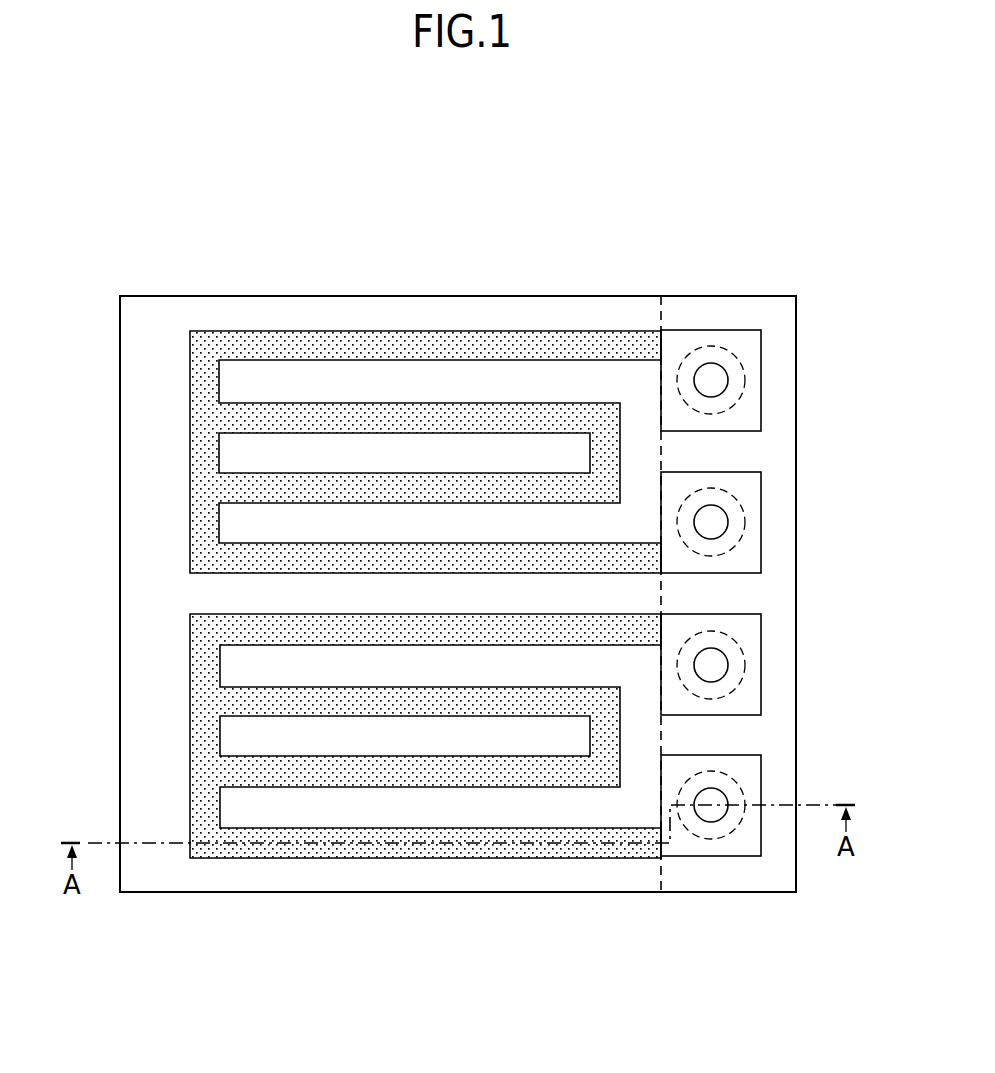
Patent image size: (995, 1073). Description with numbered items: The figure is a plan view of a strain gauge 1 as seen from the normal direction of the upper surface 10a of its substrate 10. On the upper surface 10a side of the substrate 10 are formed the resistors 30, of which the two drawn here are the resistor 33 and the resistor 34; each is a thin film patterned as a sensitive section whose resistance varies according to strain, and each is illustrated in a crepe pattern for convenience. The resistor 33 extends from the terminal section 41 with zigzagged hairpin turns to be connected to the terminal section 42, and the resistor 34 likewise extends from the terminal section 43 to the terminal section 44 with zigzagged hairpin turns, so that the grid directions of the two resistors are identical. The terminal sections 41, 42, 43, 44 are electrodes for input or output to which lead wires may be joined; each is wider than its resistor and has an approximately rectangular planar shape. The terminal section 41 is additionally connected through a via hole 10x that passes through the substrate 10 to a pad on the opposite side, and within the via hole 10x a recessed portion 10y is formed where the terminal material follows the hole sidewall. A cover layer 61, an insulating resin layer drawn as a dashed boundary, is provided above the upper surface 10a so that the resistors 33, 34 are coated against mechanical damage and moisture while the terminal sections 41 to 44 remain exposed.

The strain gauge 1 is at (462, 540).
The substrate 10 is at (687, 288).
The upper surface of substrate 10a is at (770, 318).
The via hole 10x is at (748, 378).
The recessed portion 10y is at (722, 387).
The resistors 30 is at (354, 541).
The resistor 33 is at (196, 520).
The resistor 34 is at (196, 661).
The terminal section 41 is at (769, 380).
The terminal section 42 is at (745, 492).
The terminal section 43 is at (745, 633).
The terminal section 44 is at (748, 777).
The cover layer 61 is at (661, 300).